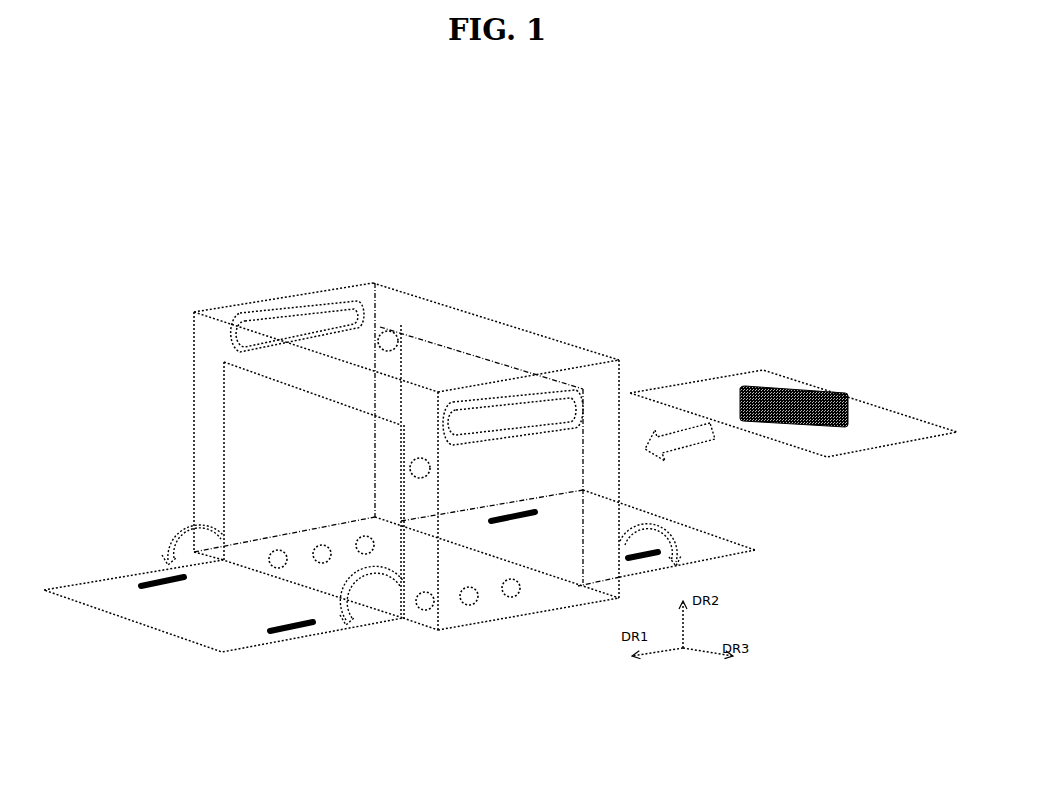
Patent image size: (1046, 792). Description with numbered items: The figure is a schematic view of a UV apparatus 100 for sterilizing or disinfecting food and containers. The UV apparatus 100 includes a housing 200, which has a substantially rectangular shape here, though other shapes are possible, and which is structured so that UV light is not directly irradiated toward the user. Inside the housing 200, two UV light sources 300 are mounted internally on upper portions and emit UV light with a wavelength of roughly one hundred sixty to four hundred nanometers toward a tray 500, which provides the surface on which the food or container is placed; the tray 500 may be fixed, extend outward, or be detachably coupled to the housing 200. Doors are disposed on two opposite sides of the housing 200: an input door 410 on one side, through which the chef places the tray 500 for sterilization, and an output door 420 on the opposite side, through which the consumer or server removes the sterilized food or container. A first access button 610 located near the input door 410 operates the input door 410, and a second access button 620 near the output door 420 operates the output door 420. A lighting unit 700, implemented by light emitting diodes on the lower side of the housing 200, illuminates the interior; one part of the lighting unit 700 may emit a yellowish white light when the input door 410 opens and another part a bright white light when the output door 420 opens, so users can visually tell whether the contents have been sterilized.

The UV apparatus 100 is at (531, 221).
The housing 200 is at (190, 352).
The UV light source 300 is at (268, 306).
The input door 410 is at (746, 535).
The output door 420 is at (96, 577).
The tray 500 is at (708, 374).
The first access button 610 is at (392, 329).
The second access button 620 is at (424, 484).
The lighting unit 700 is at (268, 552).